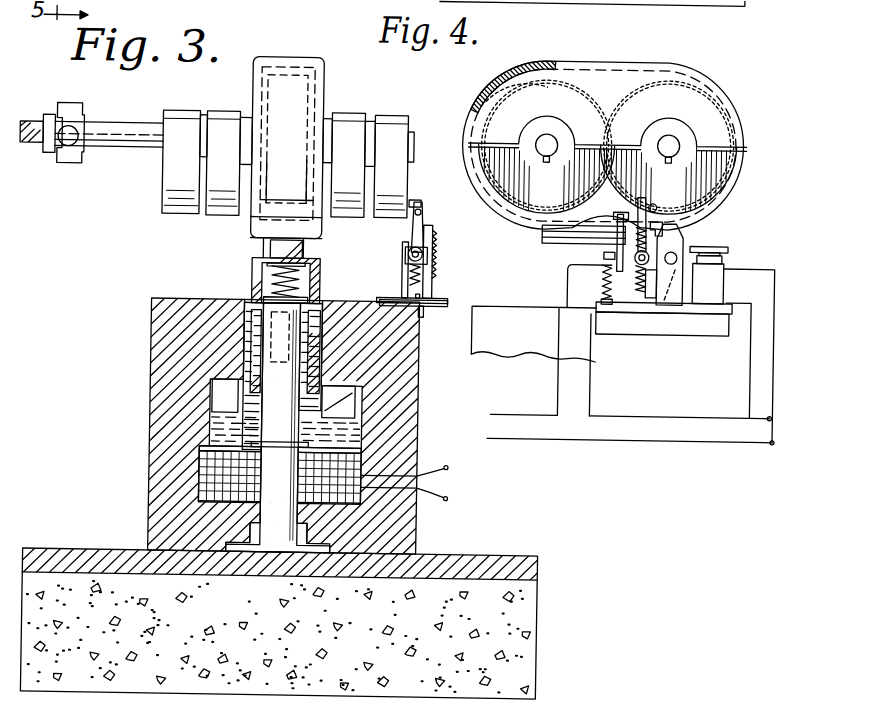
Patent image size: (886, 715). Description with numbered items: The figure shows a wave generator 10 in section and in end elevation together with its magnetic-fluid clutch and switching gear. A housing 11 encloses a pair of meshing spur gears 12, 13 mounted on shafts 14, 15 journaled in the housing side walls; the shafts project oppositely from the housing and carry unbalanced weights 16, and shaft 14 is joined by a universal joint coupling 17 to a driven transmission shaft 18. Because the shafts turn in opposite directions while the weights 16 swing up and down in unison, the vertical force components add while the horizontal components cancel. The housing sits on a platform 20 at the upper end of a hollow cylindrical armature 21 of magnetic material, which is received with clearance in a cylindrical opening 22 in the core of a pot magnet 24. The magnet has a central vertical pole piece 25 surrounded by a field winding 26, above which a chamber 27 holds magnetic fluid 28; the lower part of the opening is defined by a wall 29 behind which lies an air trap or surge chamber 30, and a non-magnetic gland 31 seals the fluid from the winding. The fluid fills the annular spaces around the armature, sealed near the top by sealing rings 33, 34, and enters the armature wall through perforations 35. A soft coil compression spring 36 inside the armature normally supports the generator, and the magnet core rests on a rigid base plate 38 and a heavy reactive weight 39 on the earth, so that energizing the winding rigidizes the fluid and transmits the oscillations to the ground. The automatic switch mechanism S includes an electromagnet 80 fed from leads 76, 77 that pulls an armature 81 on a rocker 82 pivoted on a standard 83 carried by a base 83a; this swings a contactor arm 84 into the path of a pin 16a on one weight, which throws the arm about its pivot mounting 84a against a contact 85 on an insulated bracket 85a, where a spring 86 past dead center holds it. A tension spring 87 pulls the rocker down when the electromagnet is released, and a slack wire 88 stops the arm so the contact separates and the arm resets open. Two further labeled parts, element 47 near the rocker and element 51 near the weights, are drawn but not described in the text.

In FIG. 3, the wave generator 10 is at (312, 58).
In FIG. 4, the wave generator 10 is at (603, 60).
In FIG. 3, the housing 11 is at (321, 88).
In FIG. 4, the housing 11 is at (509, 66).
In FIG. 4, the spur gear 12 is at (479, 94).
In FIG. 4, the spur gear 13 is at (640, 80).
In FIG. 3, the shaft 14 is at (133, 127).
In FIG. 4, the shaft 14 is at (530, 157).
In FIG. 4, the shaft 15 is at (680, 140).
In FIG. 3, the unbalanced weights 16 is at (178, 214).
In FIG. 4, the unbalanced weights 16 is at (730, 186).
In FIG. 3, the pin 16a is at (414, 200).
In FIG. 4, the pin 16a is at (720, 205).
In FIG. 3, the universal joint coupling 17 is at (66, 168).
In FIG. 3, the transmission shaft 18 is at (29, 127).
In FIG. 3, the platform 20 is at (248, 235).
In FIG. 3, the hollow cylindrical armature 21 is at (314, 284).
In FIG. 3, the cylindrical opening 22 is at (244, 355).
In FIG. 3, the pot magnet 24 is at (150, 395).
In FIG. 4, the pot magnet 24 is at (737, 360).
In FIG. 3, the central vertical pole piece 25 is at (272, 548).
In FIG. 3, the field winding 26 is at (212, 470).
In FIG. 3, the chamber 27 is at (359, 428).
In FIG. 3, the magnetic fluid 28 is at (356, 406).
In FIG. 3, the wall 29 is at (419, 322).
In FIG. 3, the air trap or surge chamber 30 is at (325, 400).
In FIG. 3, the non-magnetic gland 31 is at (368, 450).
In FIG. 3, the sealing ring 33 is at (322, 288).
In FIG. 3, the sealing ring 34 is at (270, 302).
In FIG. 3, the perforations 35 is at (247, 320).
In FIG. 3, the coil compression spring 36 is at (266, 268).
In FIG. 3, the rigid base plate 38 is at (488, 553).
In FIG. 3, the reactive weight 39 is at (537, 610).
In FIG. 4, the contact plate 47 is at (712, 246).
In FIG. 4, the pin 51 is at (618, 215).
In FIG. 4, the lead 76 is at (776, 422).
In FIG. 4, the lead 77 is at (774, 444).
In FIG. 4, the electromagnet 80 is at (724, 285).
In FIG. 4, the armature 81 is at (724, 259).
In FIG. 4, the rocker 82 is at (730, 250).
In FIG. 4, the supporting standard 83 is at (672, 298).
In FIG. 4, the base 83a is at (692, 318).
In FIG. 3, the contactor arm 84 is at (410, 212).
In FIG. 4, the contactor arm 84 is at (644, 202).
In FIG. 4, the pivot mounting 84a is at (637, 262).
In FIG. 4, the contact 85 is at (617, 222).
In FIG. 3, the insulated bracket 85a is at (424, 238).
In FIG. 4, the insulated bracket 85a is at (605, 257).
In FIG. 3, the spring 86 is at (420, 270).
In FIG. 4, the spring 86 is at (638, 298).
In FIG. 3, the tension spring 87 is at (422, 292).
In FIG. 4, the tension spring 87 is at (603, 283).
In FIG. 4, the slack wire 88 is at (663, 236).
In FIG. 4, the auxiliary automatic switch mechanism S is at (560, 233).